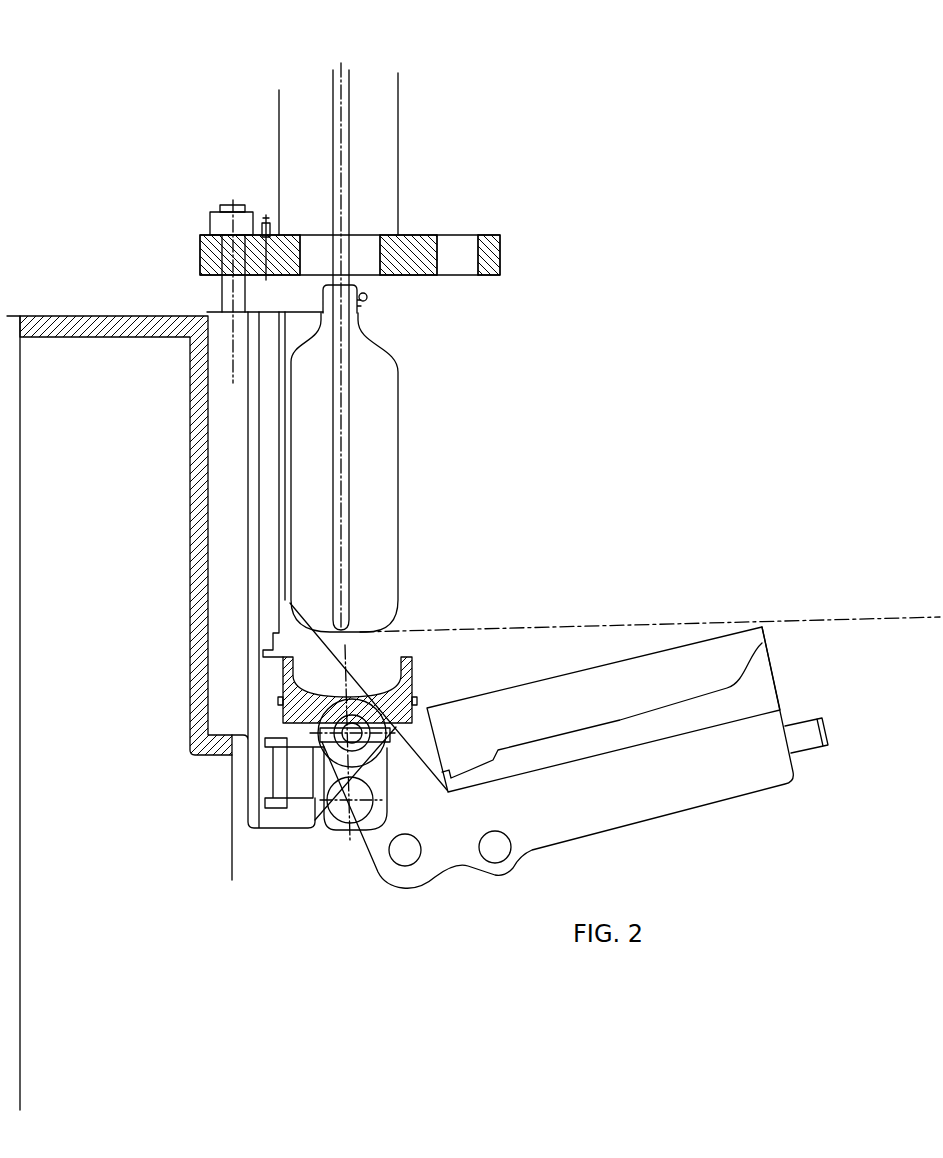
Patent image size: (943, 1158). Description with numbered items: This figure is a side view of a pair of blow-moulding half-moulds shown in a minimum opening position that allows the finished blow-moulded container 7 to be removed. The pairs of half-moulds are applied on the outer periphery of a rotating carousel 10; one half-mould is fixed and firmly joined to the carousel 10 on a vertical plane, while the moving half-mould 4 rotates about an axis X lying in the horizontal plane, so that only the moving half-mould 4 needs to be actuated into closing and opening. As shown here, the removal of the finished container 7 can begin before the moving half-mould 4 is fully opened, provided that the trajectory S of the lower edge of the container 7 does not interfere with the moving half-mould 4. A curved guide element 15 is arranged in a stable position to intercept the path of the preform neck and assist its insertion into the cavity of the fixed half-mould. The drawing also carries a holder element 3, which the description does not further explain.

The rotating carousel 10 is at (97, 313).
The curved guide element 15 is at (366, 293).
The finished container 7 is at (398, 415).
The holder 3 is at (277, 493).
The trajectory of the lower edge of the container S is at (632, 622).
The moving half-mould 4 is at (755, 675).
The axis X is at (315, 820).